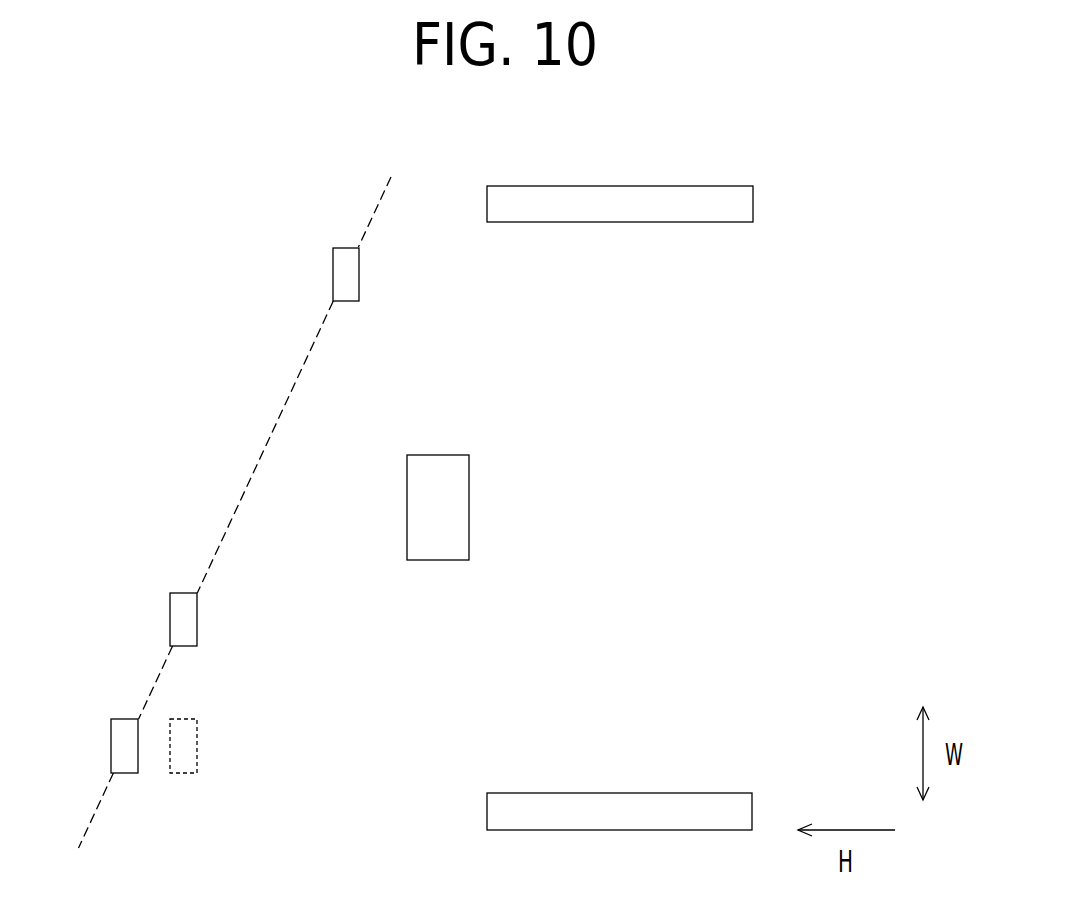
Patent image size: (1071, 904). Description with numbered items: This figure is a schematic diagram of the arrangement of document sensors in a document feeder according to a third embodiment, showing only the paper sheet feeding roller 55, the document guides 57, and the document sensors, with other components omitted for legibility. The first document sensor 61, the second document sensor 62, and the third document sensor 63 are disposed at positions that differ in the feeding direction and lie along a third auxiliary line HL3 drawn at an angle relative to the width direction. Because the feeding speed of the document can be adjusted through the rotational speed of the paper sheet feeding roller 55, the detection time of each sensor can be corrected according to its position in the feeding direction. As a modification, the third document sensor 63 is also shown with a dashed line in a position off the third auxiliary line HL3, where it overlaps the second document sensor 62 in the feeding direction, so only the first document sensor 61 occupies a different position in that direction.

The third auxiliary line HL3 is at (381, 202).
The paper sheet feeding roller 55 is at (441, 468).
The document guides 57 is at (681, 200).
The first document sensor 61 is at (342, 270).
The second document sensor 62 is at (180, 613).
The third document sensor 63 is at (120, 742).